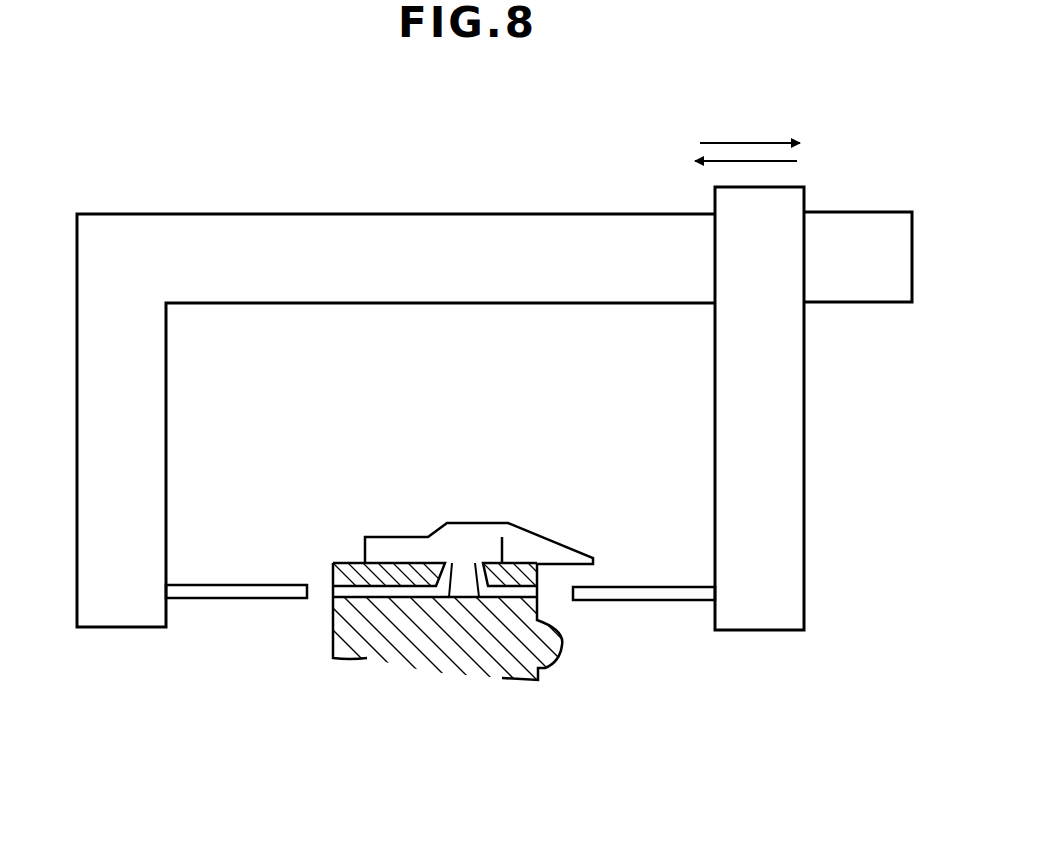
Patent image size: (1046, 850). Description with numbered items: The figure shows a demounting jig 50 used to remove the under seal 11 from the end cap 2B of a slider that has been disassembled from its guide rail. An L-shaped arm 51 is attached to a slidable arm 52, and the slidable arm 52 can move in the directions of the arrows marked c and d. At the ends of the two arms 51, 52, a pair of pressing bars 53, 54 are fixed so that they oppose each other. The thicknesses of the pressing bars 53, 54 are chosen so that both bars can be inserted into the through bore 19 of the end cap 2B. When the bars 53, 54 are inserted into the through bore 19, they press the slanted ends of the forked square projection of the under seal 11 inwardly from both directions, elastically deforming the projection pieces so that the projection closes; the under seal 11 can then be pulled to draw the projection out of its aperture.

The demounting jig 50 is at (499, 200).
The L-shaped arm 51 is at (221, 236).
The slidable arm 52 is at (792, 202).
The pressing bar 53 is at (253, 598).
The pressing bar 54 is at (646, 600).
The end cap 2B is at (345, 633).
The through bore 19 is at (525, 592).
The under seal 11 is at (484, 517).